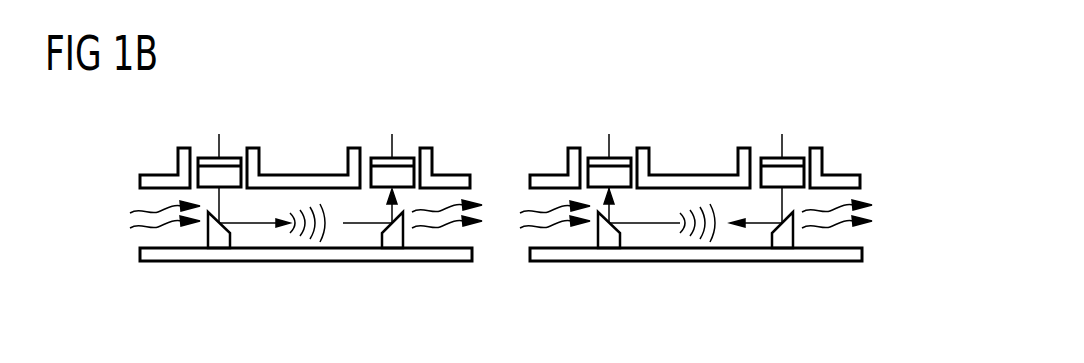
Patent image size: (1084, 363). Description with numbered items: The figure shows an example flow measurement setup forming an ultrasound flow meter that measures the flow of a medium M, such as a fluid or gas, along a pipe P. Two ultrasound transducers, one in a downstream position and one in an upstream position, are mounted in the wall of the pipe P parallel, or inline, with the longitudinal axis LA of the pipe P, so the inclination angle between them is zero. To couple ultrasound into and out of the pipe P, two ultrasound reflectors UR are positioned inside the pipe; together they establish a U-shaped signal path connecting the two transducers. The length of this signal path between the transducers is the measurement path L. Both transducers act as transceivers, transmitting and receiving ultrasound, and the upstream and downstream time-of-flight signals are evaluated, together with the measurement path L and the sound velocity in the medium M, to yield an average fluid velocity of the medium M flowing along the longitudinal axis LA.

The medium M is at (275, 197).
The pipe P is at (453, 179).
The longitudinal axis LA is at (118, 218).
The ultrasound reflector UR is at (220, 238).
The measurement path L is at (357, 228).